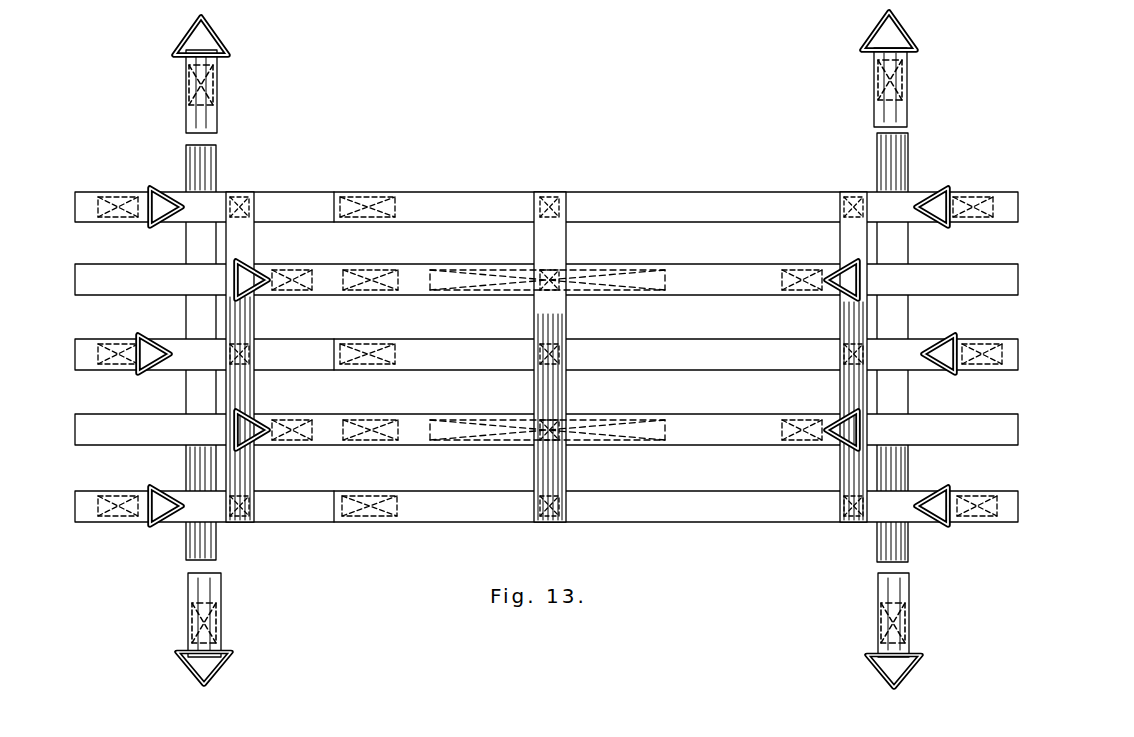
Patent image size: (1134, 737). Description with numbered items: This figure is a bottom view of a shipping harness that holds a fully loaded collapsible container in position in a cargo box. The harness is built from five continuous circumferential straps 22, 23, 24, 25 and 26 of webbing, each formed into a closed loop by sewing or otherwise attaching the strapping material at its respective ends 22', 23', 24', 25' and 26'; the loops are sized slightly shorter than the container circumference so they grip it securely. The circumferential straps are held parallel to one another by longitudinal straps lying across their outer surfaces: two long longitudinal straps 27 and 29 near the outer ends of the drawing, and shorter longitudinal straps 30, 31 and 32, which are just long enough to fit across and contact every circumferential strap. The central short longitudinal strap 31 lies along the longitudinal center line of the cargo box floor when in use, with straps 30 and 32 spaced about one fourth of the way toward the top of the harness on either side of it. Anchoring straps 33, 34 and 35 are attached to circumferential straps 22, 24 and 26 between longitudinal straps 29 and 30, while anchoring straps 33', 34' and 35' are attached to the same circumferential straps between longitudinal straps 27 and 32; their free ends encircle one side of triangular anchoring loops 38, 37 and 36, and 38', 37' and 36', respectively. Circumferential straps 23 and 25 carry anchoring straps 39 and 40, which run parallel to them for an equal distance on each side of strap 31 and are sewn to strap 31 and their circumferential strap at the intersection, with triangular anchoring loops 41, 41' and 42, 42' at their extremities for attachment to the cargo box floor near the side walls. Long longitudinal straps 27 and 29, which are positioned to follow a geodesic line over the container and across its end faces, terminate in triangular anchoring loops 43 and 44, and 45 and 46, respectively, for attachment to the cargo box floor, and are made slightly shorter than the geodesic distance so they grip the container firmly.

The circumferential strap 22 is at (546, 486).
The strap end 22' is at (377, 485).
The circumferential strap 23 is at (546, 412).
The strap end 23' is at (340, 408).
The circumferential strap 24 is at (546, 337).
The strap end 24' is at (374, 334).
The circumferential strap 25 is at (546, 262).
The strap end 25' is at (337, 258).
The circumferential strap 26 is at (546, 187).
The strap end 26' is at (371, 183).
The long longitudinal strap 27 is at (217, 160).
The long longitudinal strap 29 is at (877, 153).
The short longitudinal strap 30 is at (846, 525).
The short longitudinal strap 31 is at (546, 525).
The short longitudinal strap 32 is at (253, 525).
The anchoring strap 33 is at (987, 534).
The anchoring strap 33' is at (118, 483).
The anchoring strap 34 is at (991, 334).
The anchoring strap 34' is at (118, 334).
The anchoring strap 35 is at (988, 181).
The anchoring strap 35' is at (119, 181).
The triangular anchoring loop 36 is at (934, 183).
The triangular anchoring loop 36' is at (162, 166).
The triangular anchoring loop 37 is at (947, 338).
The triangular anchoring loop 37' is at (156, 338).
The triangular anchoring loop 38 is at (947, 487).
The triangular anchoring loop 38' is at (163, 487).
The anchoring strap 39 is at (735, 418).
The anchoring strap 40 is at (715, 268).
The triangular anchoring loop 41 is at (826, 411).
The triangular anchoring loop 41' is at (268, 411).
The triangular anchoring loop 42 is at (822, 262).
The triangular anchoring loop 42' is at (268, 262).
The triangular anchoring loop 43 is at (222, 38).
The triangular anchoring loop 44 is at (226, 660).
The triangular anchoring loop 45 is at (868, 35).
The triangular anchoring loop 46 is at (872, 662).